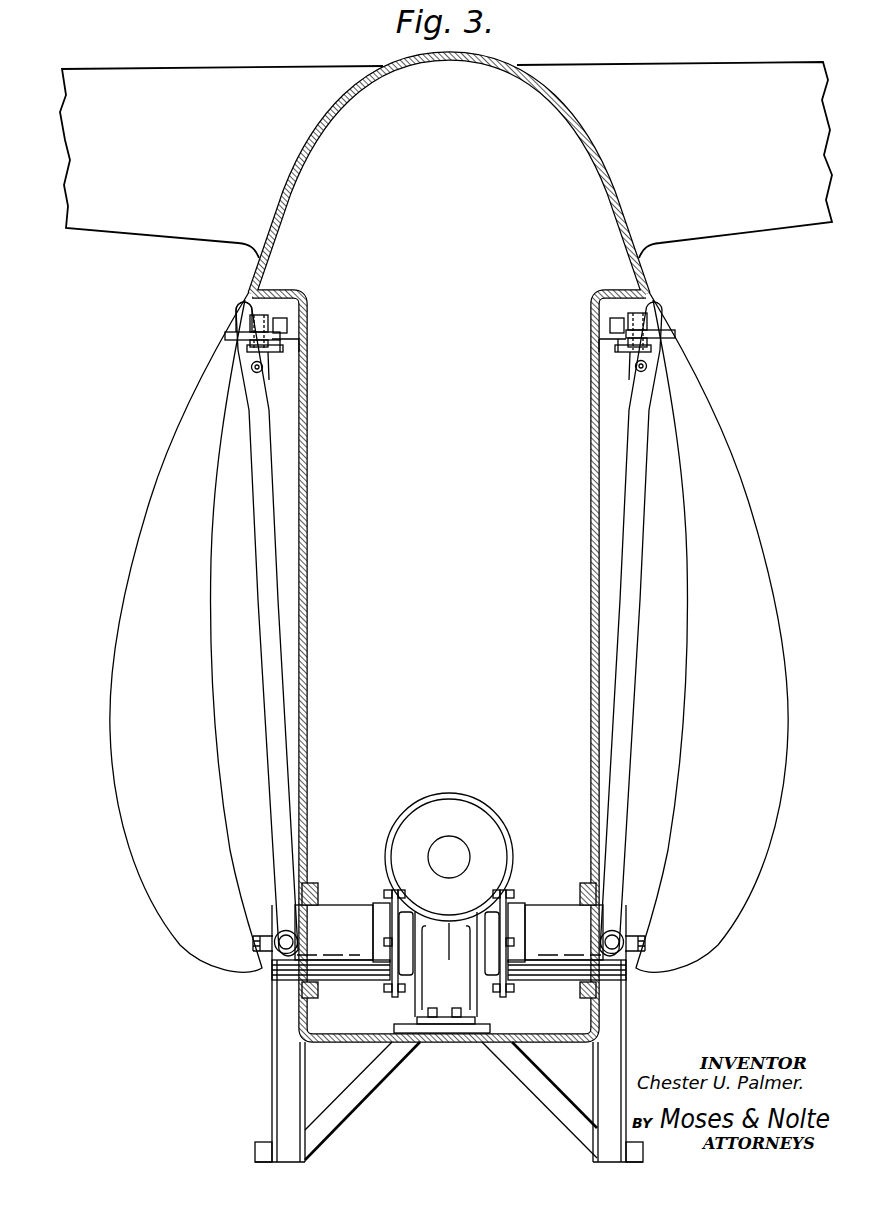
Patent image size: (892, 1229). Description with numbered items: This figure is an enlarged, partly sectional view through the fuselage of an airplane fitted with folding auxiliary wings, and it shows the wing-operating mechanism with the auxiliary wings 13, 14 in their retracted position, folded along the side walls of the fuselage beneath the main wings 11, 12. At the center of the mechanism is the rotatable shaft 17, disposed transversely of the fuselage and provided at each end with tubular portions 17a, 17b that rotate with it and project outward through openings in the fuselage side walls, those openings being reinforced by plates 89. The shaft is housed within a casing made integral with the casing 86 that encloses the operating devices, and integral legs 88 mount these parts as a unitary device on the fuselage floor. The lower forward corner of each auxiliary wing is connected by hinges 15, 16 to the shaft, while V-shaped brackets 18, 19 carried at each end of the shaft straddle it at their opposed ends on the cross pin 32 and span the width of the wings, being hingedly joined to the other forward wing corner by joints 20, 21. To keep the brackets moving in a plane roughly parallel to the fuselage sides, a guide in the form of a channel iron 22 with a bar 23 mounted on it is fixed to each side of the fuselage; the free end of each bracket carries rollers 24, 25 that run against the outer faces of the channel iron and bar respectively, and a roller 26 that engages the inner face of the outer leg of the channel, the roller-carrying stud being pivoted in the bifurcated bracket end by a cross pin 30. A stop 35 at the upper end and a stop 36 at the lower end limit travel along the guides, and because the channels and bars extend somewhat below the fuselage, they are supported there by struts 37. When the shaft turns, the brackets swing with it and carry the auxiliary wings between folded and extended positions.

The main wing 11 is at (674, 160).
The main wing 12 is at (221, 162).
The auxiliary wing 13 is at (712, 632).
The auxiliary wing 14 is at (186, 632).
The hinge 15 is at (644, 943).
The hinge 16 is at (252, 943).
The rotatable shaft 17 is at (449, 930).
The tubular portion 17a is at (326, 966).
The tubular portion 17b is at (544, 962).
The bracket 18 is at (630, 560).
The bracket 19 is at (262, 535).
The joint 20 is at (652, 332).
The joint 21 is at (233, 333).
The guide channel iron 22 is at (282, 341).
The bar 23 is at (288, 327).
The roller 24 is at (247, 347).
The roller 25 is at (245, 322).
The roller 26 is at (270, 353).
The cross pin 30 is at (253, 369).
The cross pin 32 is at (298, 941).
The stop 35 is at (260, 315).
The stop 36 is at (263, 1153).
The strut 37 is at (375, 1088).
The casing 86 is at (443, 795).
The leg 88 is at (432, 992).
The plate 89 is at (314, 884).